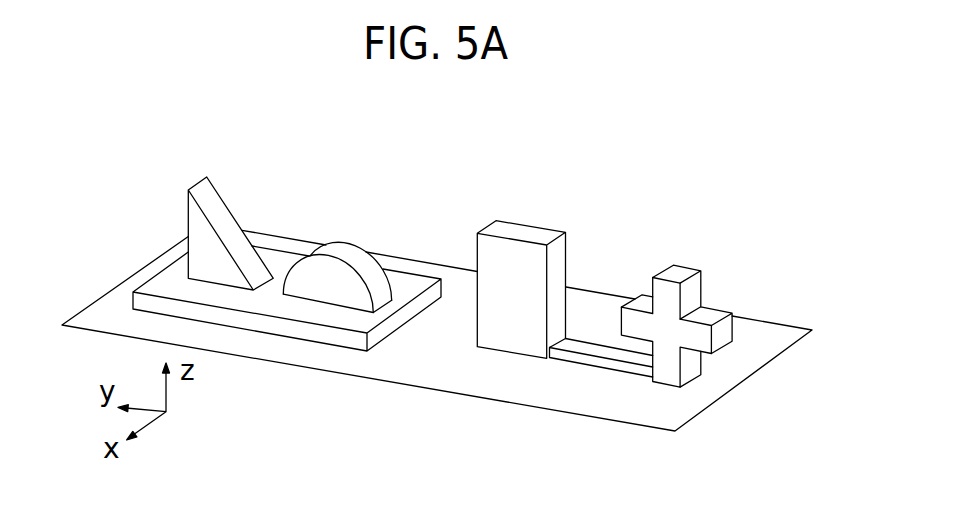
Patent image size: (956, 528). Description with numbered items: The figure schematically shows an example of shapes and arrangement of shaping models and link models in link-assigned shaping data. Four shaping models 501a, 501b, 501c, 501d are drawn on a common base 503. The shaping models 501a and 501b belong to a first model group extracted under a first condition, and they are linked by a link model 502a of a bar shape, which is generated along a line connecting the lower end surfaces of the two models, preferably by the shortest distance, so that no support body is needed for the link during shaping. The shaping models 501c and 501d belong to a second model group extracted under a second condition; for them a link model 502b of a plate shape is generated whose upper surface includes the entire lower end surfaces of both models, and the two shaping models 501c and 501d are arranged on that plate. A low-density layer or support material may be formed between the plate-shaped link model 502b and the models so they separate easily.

The shaping model 501a is at (532, 235).
The shaping model 501b is at (682, 268).
The shaping model 501c is at (221, 215).
The shaping model 501d is at (344, 250).
The link model of a bar shape 502a is at (582, 355).
The link model of a plate shape 502b is at (307, 330).
The base substrate 503 is at (673, 410).